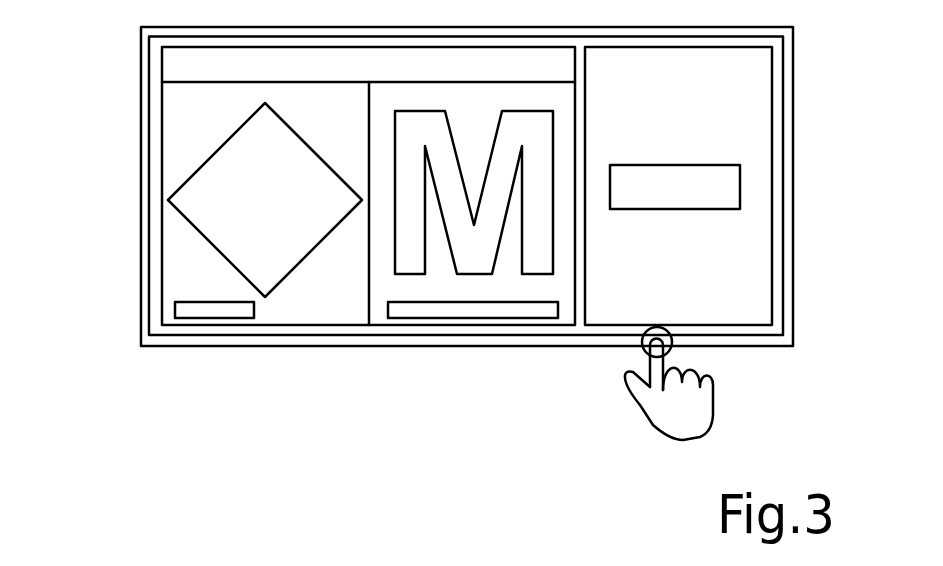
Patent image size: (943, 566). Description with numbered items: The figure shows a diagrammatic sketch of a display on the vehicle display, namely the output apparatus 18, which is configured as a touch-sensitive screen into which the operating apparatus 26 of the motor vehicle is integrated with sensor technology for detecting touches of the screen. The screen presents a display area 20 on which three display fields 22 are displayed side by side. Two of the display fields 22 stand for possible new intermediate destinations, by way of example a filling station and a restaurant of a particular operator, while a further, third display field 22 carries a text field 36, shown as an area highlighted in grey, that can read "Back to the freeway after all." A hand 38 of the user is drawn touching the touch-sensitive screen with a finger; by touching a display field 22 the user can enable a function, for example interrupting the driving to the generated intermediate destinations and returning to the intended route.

The output apparatus 18 is at (526, 186).
The operating apparatus 26 is at (793, 233).
The display area 20 is at (783, 48).
The display field 22 is at (162, 173).
The text field 36 is at (162, 67).
The hand 38 is at (713, 422).